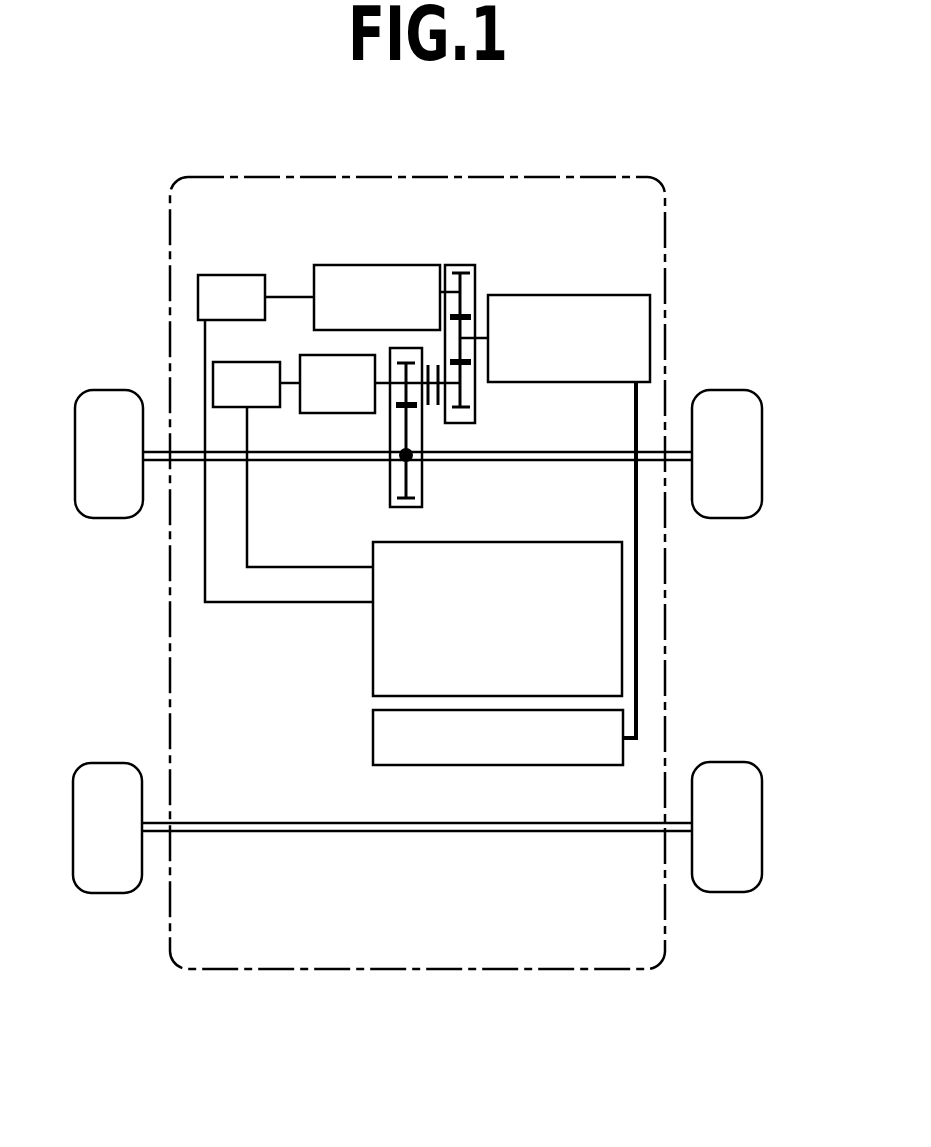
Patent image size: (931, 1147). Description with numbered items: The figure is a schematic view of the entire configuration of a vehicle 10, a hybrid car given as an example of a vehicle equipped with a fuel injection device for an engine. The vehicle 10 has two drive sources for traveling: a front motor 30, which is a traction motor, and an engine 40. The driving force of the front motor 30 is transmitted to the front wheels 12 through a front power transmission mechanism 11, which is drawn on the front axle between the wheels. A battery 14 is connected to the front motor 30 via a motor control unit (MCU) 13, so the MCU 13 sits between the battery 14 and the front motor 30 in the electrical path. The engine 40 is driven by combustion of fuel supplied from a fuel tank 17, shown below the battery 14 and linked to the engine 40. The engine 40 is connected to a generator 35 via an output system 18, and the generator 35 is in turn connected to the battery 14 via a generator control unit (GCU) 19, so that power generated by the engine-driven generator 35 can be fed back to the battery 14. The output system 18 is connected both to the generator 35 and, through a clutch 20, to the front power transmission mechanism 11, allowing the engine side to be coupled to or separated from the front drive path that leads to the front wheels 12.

The vehicle 10 is at (788, 191).
The front power transmission mechanism 11 is at (392, 465).
The front wheels 12 is at (75, 425).
The motor control unit (MCU) 13 is at (213, 367).
The battery 14 is at (373, 680).
The fuel tank 17 is at (555, 765).
The output system 18 is at (473, 283).
The generator control unit (GCU) 19 is at (198, 292).
The clutch 20 is at (435, 410).
The front motor 30 is at (300, 358).
The generator 35 is at (310, 285).
The engine 40 is at (651, 310).